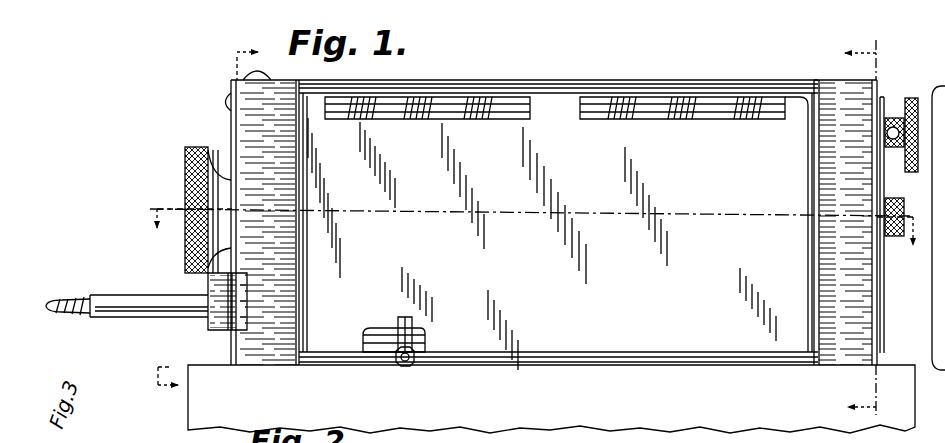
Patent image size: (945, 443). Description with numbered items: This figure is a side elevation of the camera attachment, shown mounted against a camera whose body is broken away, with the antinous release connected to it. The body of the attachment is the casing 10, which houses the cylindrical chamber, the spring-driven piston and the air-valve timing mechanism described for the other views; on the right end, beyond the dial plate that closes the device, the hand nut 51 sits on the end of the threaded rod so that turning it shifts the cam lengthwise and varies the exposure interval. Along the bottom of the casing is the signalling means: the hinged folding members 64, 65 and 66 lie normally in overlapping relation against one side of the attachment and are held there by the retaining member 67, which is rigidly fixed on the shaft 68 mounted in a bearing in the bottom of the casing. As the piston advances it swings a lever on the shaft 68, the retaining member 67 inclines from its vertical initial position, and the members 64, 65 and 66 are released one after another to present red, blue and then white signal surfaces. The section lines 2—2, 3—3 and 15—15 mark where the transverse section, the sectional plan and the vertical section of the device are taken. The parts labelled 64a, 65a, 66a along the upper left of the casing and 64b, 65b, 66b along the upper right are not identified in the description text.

The section line 2— 2 is at (870, 227).
The section line 3— 3 is at (536, 215).
The casing 10 is at (497, 97).
The section line 15— 15 is at (208, 214).
The hand nut 51 is at (912, 98).
The folding member 64 is at (384, 330).
The folding member 65 is at (378, 343).
The folding member 66 is at (372, 336).
The retaining member 67 is at (398, 320).
The shaft 68 is at (410, 360).
The spring clip 64a is at (366, 105).
The spring clip 65a is at (422, 106).
The spring clip 66a is at (485, 102).
The spring clip 64b is at (638, 100).
The spring clip 65b is at (695, 100).
The spring clip 66b is at (758, 100).